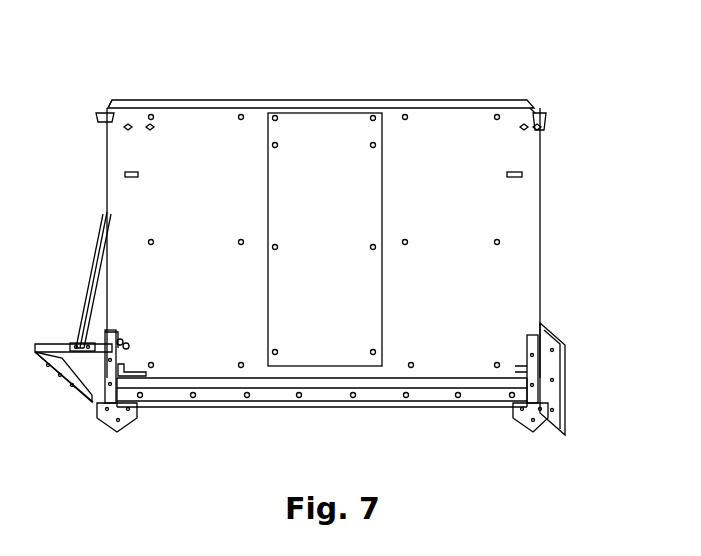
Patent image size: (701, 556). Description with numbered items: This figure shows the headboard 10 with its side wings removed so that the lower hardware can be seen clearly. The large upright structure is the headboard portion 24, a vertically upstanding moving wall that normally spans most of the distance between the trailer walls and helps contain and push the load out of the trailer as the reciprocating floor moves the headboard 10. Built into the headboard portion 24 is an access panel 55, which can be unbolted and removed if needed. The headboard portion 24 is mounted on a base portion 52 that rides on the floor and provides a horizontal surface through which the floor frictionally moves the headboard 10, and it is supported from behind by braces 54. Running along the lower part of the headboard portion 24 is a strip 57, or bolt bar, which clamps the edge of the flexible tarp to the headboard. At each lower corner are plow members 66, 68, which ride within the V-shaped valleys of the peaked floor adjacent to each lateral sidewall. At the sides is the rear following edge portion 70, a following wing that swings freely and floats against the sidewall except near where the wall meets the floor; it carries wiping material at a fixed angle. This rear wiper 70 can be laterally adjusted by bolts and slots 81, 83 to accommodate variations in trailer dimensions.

The headboard 10 is at (414, 62).
The headboard portion 24 is at (452, 167).
The access panel 55 is at (331, 208).
The strip (bolt bar) 57 is at (270, 395).
The braces 54 is at (97, 266).
The base portion 52 is at (66, 346).
The rear following edge portion 70 is at (88, 368).
The bolts and slots 81 is at (128, 345).
The bolts and slots 83 is at (141, 361).
The plow member 66 is at (117, 433).
The plow member 68 is at (535, 433).